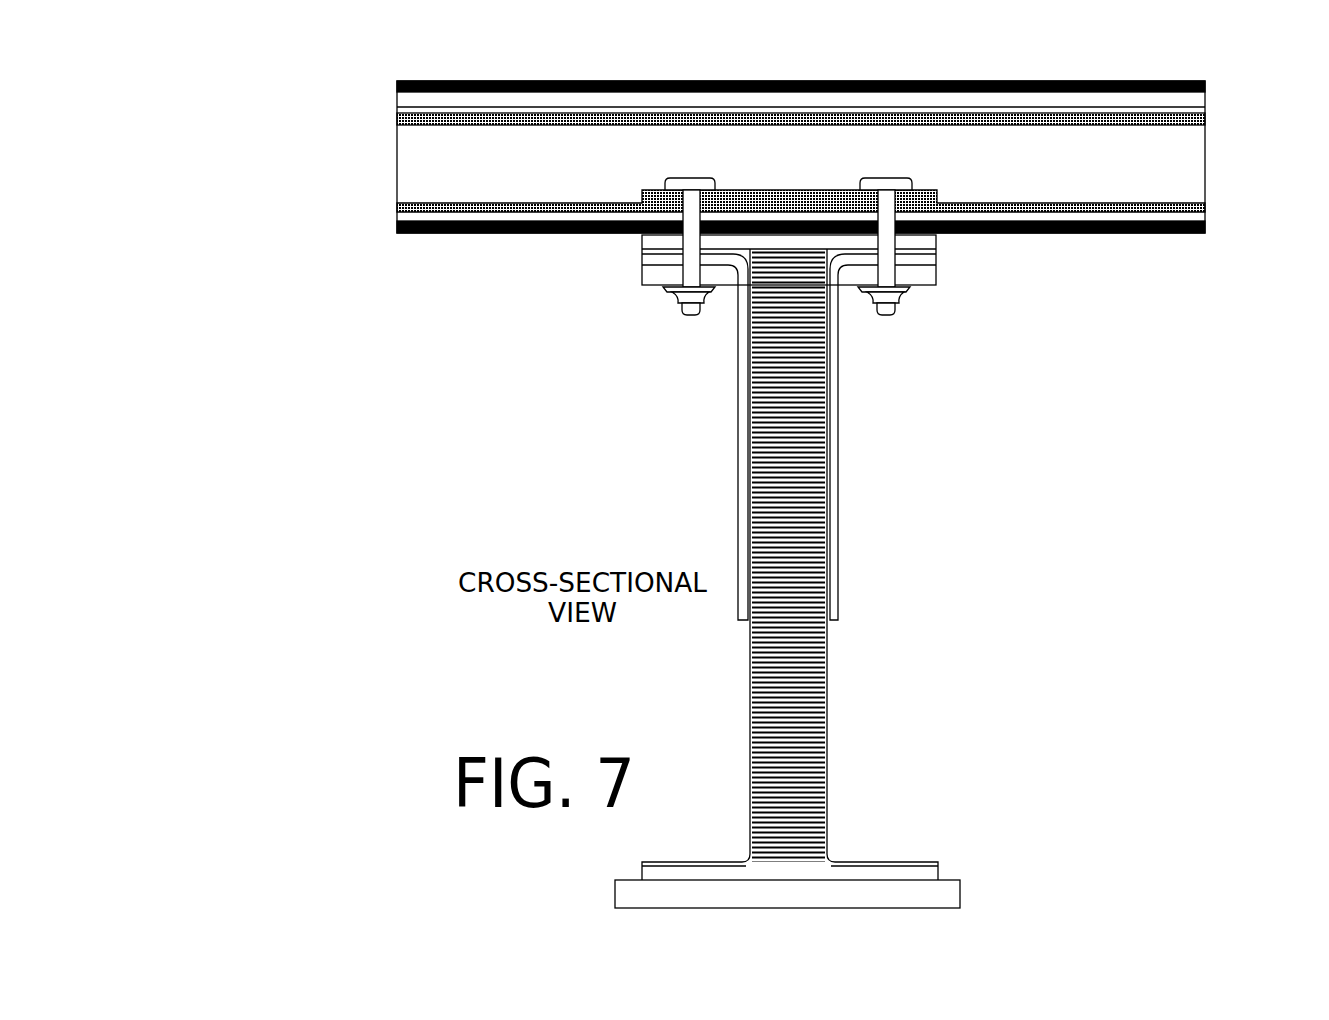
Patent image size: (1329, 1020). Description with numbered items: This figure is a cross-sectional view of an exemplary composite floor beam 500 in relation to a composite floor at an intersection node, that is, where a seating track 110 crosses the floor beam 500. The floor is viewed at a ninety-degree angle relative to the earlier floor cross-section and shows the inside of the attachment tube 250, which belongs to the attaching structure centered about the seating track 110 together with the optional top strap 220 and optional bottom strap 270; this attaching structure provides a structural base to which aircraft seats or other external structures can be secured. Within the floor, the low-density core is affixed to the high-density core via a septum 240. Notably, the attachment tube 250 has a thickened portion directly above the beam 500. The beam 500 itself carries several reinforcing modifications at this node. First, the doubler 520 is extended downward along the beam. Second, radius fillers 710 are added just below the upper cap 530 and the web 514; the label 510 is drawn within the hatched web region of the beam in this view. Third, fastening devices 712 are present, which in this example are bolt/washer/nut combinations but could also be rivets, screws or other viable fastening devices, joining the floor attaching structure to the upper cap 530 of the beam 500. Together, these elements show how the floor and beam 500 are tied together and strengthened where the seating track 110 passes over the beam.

The seating track 110 is at (749, 155).
The top strap 220 is at (1209, 97).
The septum 240 is at (1209, 108).
The attachment tube 250 is at (423, 131).
The bottom strap 270 is at (1209, 215).
The composite floor beam 500 is at (768, 543).
The support post 510 is at (787, 578).
The web 514 is at (831, 697).
The doubler 520 is at (843, 463).
The upper cap 530 is at (938, 242).
The radius fillers 710 is at (640, 273).
The fastening devices 712 is at (692, 323).